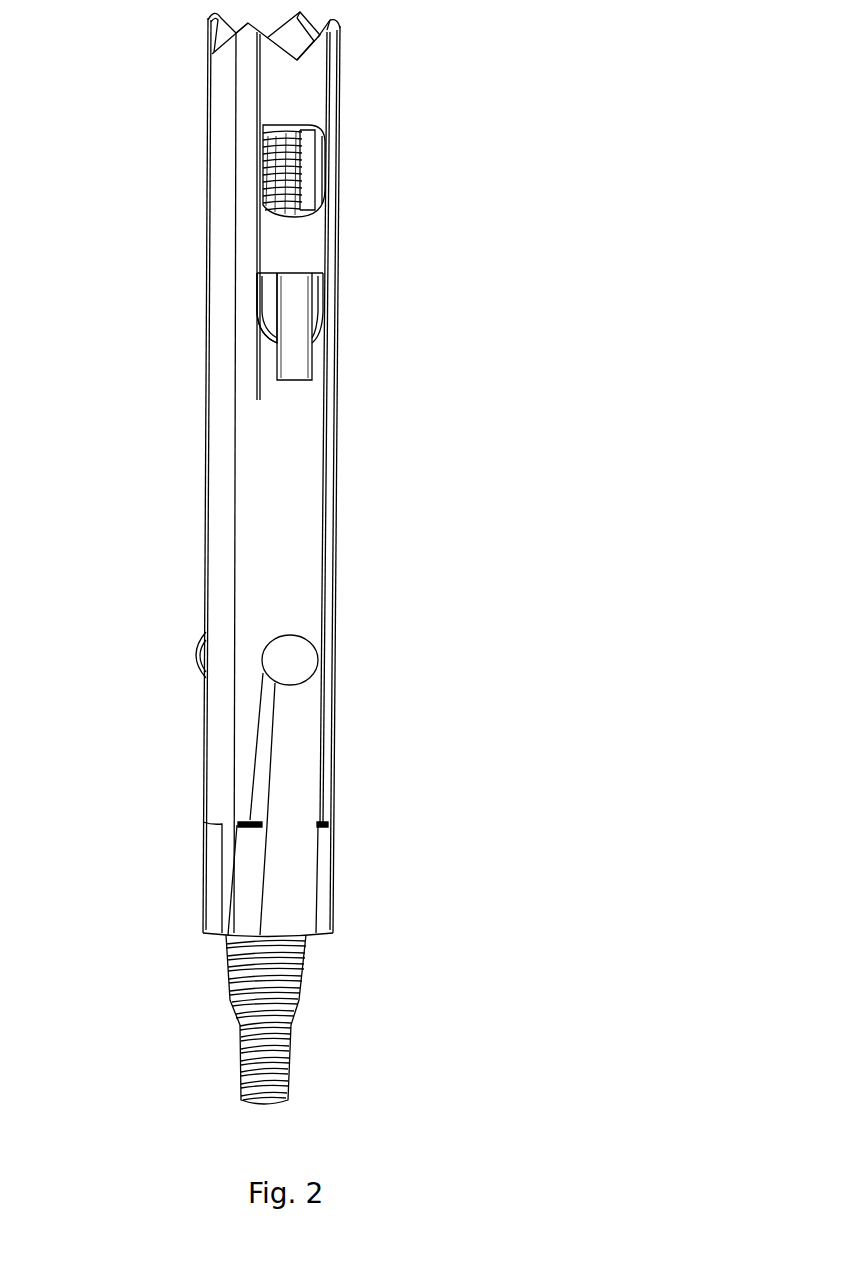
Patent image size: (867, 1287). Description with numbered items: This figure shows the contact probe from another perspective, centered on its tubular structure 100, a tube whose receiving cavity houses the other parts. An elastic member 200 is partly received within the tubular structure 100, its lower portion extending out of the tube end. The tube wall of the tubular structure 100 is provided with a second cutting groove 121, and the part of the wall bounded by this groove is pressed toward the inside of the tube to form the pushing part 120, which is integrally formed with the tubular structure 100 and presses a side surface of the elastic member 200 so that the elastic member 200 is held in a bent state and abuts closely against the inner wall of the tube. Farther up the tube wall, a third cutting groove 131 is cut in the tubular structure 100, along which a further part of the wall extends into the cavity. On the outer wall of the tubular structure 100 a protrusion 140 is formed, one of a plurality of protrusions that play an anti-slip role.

The tubular structure 100 is at (240, 474).
The pushing part 120 is at (290, 322).
The second cutting groove 121 is at (253, 305).
The third cutting groove 131 is at (327, 182).
The protrusion 140 is at (295, 668).
The elastic member 200 is at (230, 965).